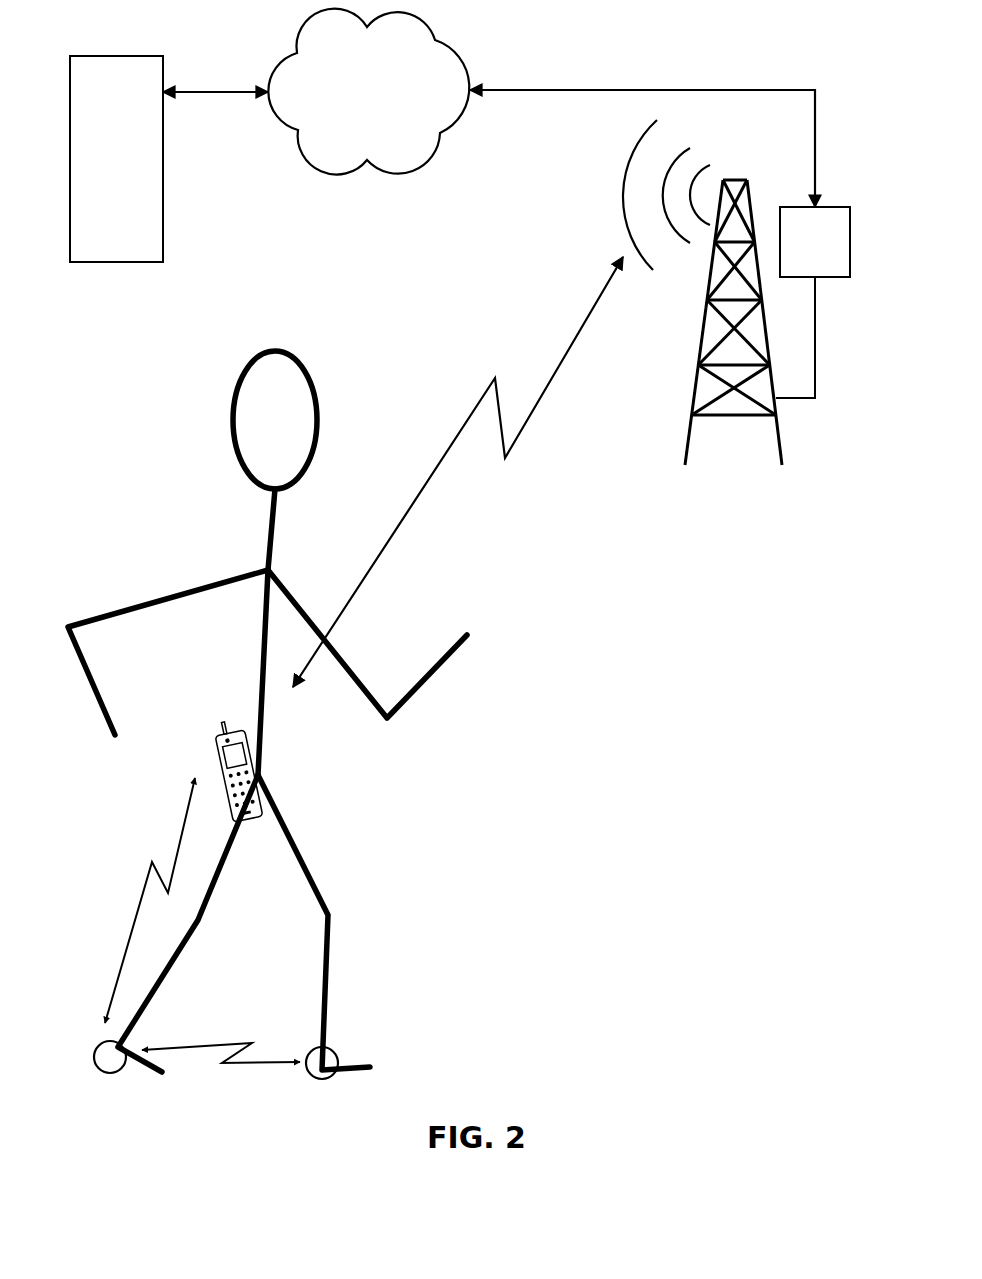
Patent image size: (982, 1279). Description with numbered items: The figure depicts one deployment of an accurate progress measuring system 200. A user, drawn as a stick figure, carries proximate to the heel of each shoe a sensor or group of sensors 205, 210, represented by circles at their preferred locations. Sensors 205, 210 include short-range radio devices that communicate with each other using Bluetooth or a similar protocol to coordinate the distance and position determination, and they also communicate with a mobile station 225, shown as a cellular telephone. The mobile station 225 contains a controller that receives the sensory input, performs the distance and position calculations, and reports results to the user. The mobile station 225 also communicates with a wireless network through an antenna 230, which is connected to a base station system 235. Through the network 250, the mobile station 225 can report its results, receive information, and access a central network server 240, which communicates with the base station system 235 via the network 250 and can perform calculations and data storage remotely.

The accurate progress measuring system 200 is at (622, 825).
The sensor 205 is at (107, 1073).
The sensor 210 is at (315, 1088).
The mobile station 225 is at (214, 747).
The antenna 230 is at (687, 453).
The base station system (BSS) 235 is at (830, 277).
The central network server 240 is at (114, 56).
The network 250 is at (434, 32).